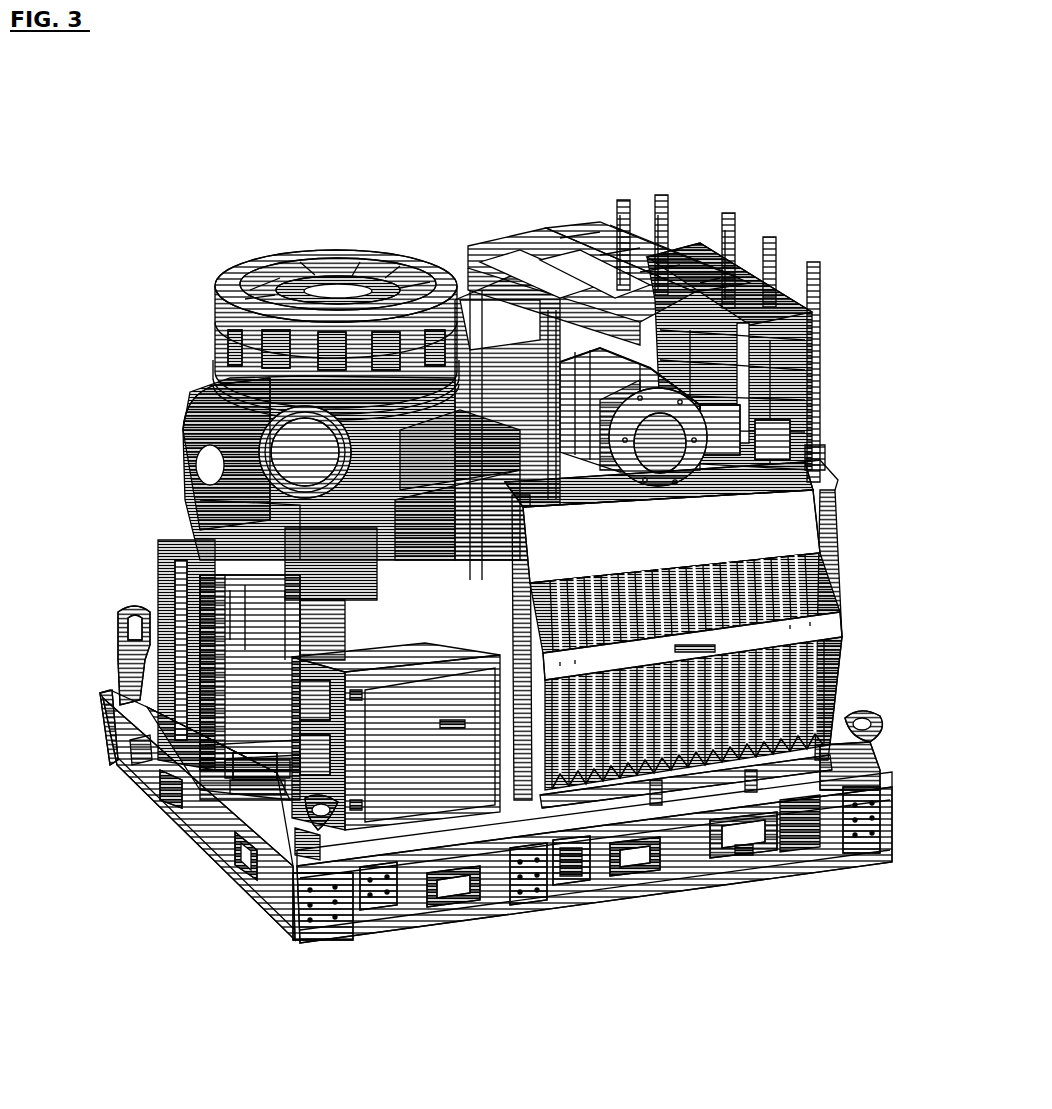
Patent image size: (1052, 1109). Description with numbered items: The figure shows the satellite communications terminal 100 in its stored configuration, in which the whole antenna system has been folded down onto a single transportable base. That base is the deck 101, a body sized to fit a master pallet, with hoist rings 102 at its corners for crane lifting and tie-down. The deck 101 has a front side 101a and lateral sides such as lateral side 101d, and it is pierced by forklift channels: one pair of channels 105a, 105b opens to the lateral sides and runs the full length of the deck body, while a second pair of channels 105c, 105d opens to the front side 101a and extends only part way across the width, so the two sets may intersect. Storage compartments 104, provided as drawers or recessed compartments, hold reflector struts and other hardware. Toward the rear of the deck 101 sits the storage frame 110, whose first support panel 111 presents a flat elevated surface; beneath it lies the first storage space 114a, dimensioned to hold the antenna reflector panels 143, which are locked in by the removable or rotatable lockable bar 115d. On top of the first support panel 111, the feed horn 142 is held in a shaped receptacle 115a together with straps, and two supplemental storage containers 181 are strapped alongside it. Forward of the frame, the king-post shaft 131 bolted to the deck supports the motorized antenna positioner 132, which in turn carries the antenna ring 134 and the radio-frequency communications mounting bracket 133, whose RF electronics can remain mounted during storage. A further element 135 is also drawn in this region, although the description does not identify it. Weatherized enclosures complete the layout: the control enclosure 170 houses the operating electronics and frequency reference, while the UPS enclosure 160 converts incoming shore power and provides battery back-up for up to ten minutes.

The satellite communications terminal 100 is at (308, 135).
The deck 101 is at (298, 933).
The front side of the deck 101a is at (125, 758).
The lateral side of the deck 101d is at (790, 840).
The hoist rings 102 is at (297, 817).
The storage compartments 104 is at (738, 855).
The channel 105a is at (470, 893).
The channel 105b is at (623, 880).
The channel 105c is at (175, 800).
The channel 105d is at (250, 863).
The storage frame 110 is at (858, 574).
The first support panel 111 is at (817, 473).
The first storage space 114a is at (672, 778).
The shaped receptacle 115a is at (670, 483).
The lockable bar 115d is at (835, 627).
The king-post shaft 131 is at (227, 713).
The motorized antenna positioner 132 is at (212, 425).
The radio-frequency communications mounting bracket 133 is at (520, 243).
The antenna ring 134 is at (298, 247).
The top beam 135 is at (548, 232).
The feed horn 142 is at (670, 463).
The antenna reflector panels 143 is at (793, 757).
The UPS enclosure 160 is at (182, 560).
The control enclosure 170 is at (398, 800).
The supplemental storage containers 181 is at (797, 413).